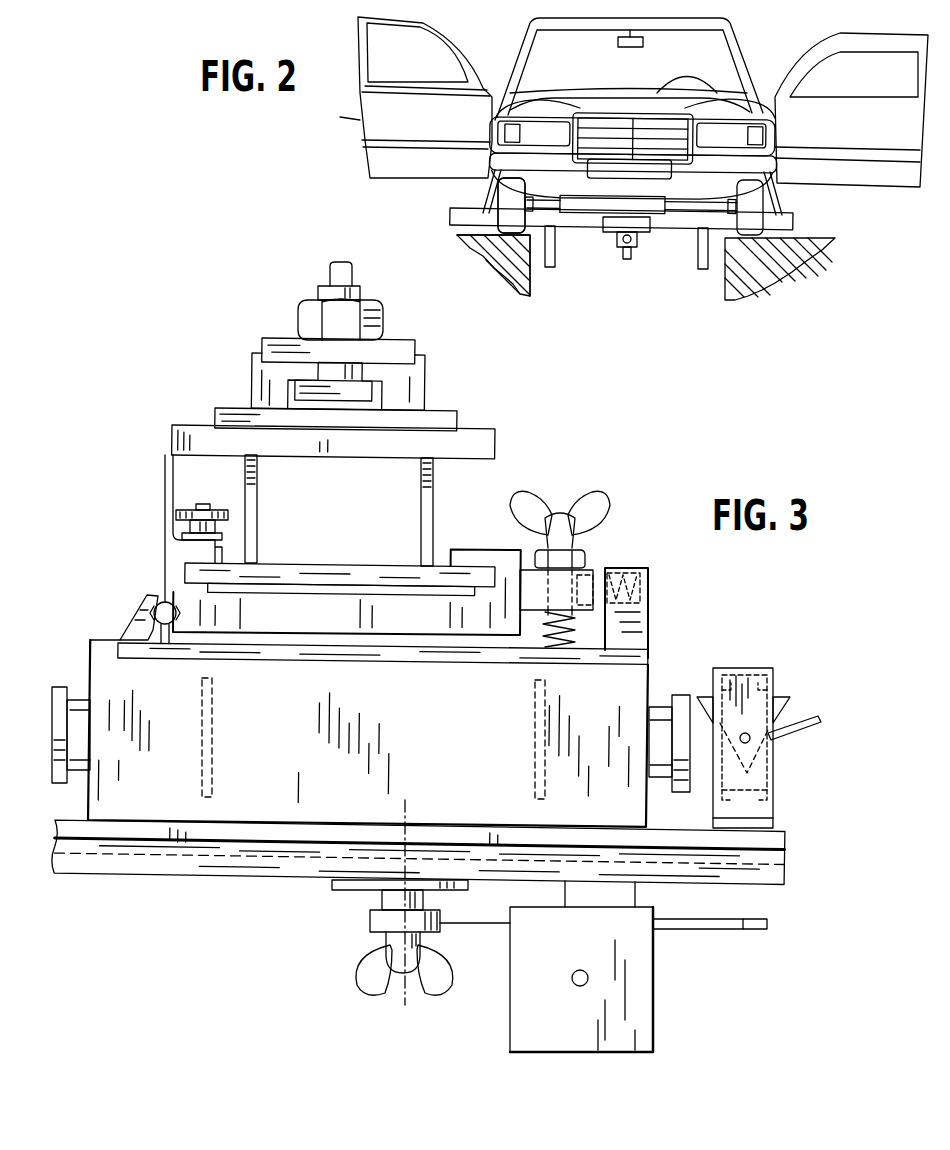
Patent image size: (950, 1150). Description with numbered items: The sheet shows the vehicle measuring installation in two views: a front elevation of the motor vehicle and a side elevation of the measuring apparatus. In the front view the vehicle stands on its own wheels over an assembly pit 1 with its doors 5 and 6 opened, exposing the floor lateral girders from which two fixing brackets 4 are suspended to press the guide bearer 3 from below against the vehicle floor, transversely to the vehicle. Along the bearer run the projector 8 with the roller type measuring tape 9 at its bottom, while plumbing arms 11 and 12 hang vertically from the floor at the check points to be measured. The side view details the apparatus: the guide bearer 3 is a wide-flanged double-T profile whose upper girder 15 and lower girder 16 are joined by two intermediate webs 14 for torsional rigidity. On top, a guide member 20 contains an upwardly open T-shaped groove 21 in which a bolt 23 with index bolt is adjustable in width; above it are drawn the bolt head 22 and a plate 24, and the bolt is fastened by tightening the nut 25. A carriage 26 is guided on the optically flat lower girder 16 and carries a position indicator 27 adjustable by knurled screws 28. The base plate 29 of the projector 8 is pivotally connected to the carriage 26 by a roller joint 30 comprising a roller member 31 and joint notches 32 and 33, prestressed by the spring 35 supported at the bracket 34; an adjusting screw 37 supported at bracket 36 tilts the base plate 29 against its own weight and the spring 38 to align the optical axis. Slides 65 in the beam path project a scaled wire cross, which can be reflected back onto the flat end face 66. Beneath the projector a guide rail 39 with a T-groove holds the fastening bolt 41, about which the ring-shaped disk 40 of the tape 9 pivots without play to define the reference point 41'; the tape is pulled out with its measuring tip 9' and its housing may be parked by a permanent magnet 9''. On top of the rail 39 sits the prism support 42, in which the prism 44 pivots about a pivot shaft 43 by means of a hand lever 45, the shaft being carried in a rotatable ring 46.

In FIG. 2, the assembly pit 1 is at (530, 292).
In FIG. 2, the guide bearer 3 is at (795, 222).
In FIG. 2, the fixing brackets 4 is at (485, 200).
In FIG. 2, the vehicle door 5 is at (848, 133).
In FIG. 2, the vehicle door 6 is at (355, 116).
In FIG. 2, the projector 8 is at (638, 240).
In FIG. 3, the projector 8 is at (308, 725).
In FIG. 2, the roller type measuring tape 9 is at (637, 266).
In FIG. 3, the roller type measuring tape 9 is at (546, 983).
In FIG. 3, the measuring tip 9' is at (710, 946).
In FIG. 3, the permanent magnet 9'' is at (625, 894).
In FIG. 2, the plumbing arm 11 is at (700, 268).
In FIG. 2, the plumbing arm 12 is at (553, 266).
In FIG. 3, the intermediate webs 14 is at (258, 540).
In FIG. 3, the upper girder 15 is at (497, 445).
In FIG. 3, the lower girder 16 is at (352, 562).
In FIG. 3, the guide member 20 is at (252, 380).
In FIG. 3, the T-shaped groove 21 is at (338, 404).
In FIG. 3, the bolt 22 is at (353, 270).
In FIG. 3, the screw or bolt 23 is at (364, 372).
In FIG. 3, the plate 24 is at (418, 350).
In FIG. 3, the nut 25 is at (385, 318).
In FIG. 2, the carriage or slide 26 is at (608, 232).
In FIG. 3, the carriage or slide 26 is at (316, 620).
In FIG. 3, the position indicator 27 is at (165, 482).
In FIG. 3, the knurled screws 28 is at (222, 508).
In FIG. 3, the base plate 29 is at (408, 655).
In FIG. 3, the roller joint 30 is at (150, 640).
In FIG. 3, the roller member 31 is at (165, 643).
In FIG. 3, the joint notch 32 is at (178, 607).
In FIG. 3, the joint notch 33 is at (148, 606).
In FIG. 3, the bracket 34 is at (650, 618).
In FIG. 3, the spring 35 is at (602, 580).
In FIG. 3, the bracket 36 is at (530, 575).
In FIG. 3, the adjusting screw 37 is at (560, 516).
In FIG. 3, the spring 38 is at (540, 632).
In FIG. 3, the guide rail 39 is at (288, 882).
In FIG. 3, the ring-shaped disk 40 is at (375, 928).
In FIG. 3, the fastening bolt 41 is at (395, 974).
In FIG. 3, the reference point 41' is at (429, 902).
In FIG. 3, the prism support 42 is at (786, 748).
In FIG. 3, the pivot shaft 43 is at (740, 745).
In FIG. 3, the prism 44 is at (780, 700).
In FIG. 3, the hand lever 45 is at (800, 728).
In FIG. 3, the rotatable ring 46 is at (726, 678).
In FIG. 3, the diapositives or slides 65 is at (212, 730).
In FIG. 3, the flat end face 66 is at (88, 665).